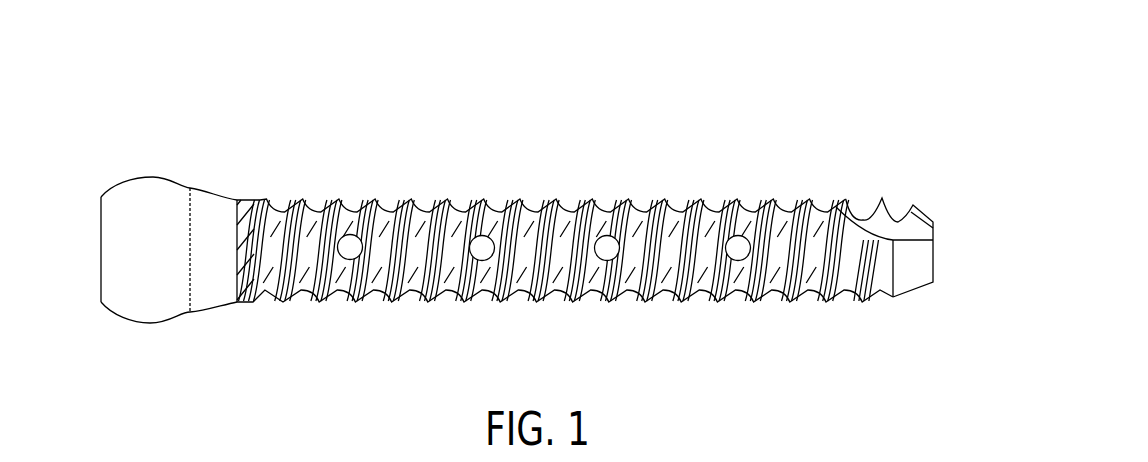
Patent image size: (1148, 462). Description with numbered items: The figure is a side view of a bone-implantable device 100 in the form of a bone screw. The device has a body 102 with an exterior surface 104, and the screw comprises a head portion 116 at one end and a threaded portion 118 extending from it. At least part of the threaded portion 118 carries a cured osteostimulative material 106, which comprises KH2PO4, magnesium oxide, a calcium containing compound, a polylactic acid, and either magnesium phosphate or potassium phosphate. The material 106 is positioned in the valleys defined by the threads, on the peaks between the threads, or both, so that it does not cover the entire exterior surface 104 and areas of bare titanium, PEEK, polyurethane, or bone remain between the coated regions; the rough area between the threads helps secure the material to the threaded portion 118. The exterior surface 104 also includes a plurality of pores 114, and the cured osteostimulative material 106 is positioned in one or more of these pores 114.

The bone-implantable device 100 is at (488, 199).
The body 102 is at (215, 292).
The exterior surface 104 is at (234, 182).
The cured osteostimulative material 106 is at (680, 212).
The pores 114 is at (363, 294).
The head portion 116 is at (104, 162).
The threaded portion 118 is at (585, 270).